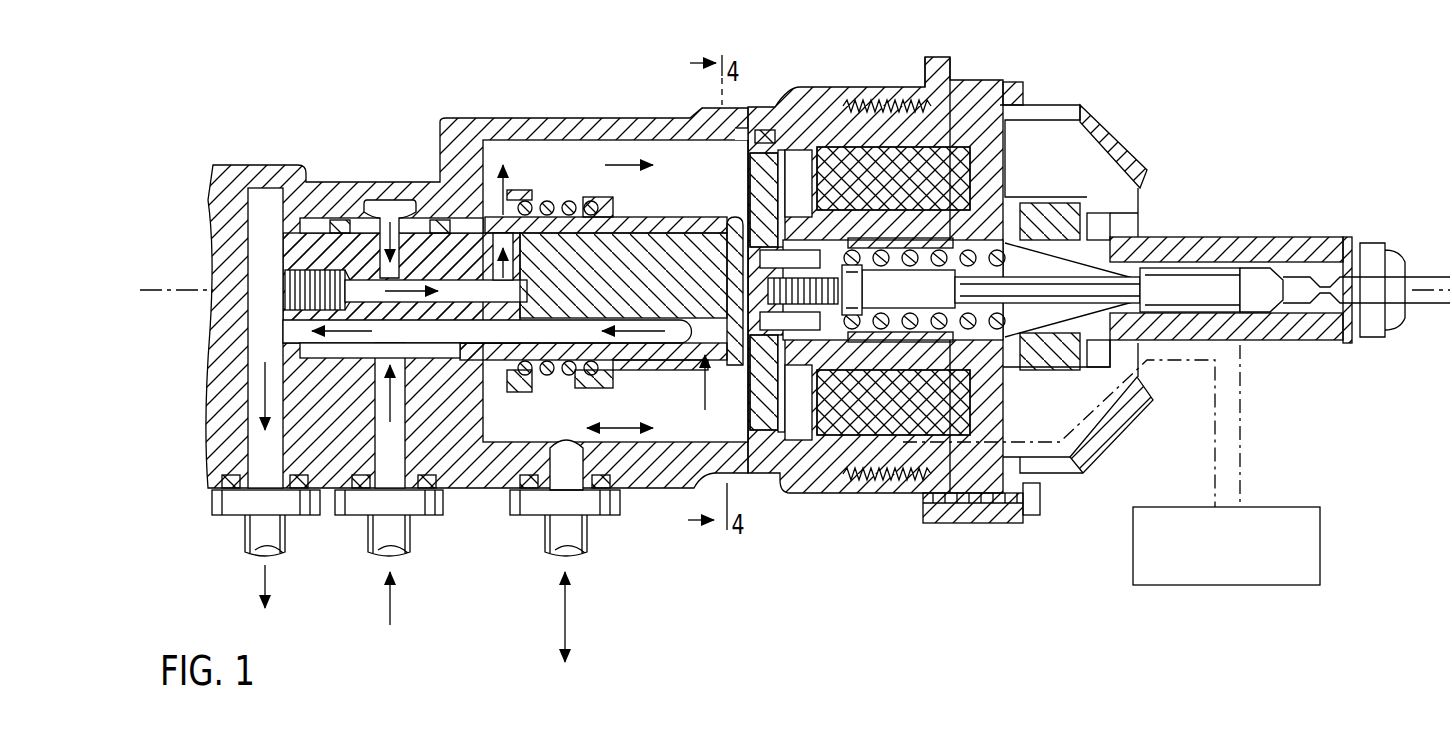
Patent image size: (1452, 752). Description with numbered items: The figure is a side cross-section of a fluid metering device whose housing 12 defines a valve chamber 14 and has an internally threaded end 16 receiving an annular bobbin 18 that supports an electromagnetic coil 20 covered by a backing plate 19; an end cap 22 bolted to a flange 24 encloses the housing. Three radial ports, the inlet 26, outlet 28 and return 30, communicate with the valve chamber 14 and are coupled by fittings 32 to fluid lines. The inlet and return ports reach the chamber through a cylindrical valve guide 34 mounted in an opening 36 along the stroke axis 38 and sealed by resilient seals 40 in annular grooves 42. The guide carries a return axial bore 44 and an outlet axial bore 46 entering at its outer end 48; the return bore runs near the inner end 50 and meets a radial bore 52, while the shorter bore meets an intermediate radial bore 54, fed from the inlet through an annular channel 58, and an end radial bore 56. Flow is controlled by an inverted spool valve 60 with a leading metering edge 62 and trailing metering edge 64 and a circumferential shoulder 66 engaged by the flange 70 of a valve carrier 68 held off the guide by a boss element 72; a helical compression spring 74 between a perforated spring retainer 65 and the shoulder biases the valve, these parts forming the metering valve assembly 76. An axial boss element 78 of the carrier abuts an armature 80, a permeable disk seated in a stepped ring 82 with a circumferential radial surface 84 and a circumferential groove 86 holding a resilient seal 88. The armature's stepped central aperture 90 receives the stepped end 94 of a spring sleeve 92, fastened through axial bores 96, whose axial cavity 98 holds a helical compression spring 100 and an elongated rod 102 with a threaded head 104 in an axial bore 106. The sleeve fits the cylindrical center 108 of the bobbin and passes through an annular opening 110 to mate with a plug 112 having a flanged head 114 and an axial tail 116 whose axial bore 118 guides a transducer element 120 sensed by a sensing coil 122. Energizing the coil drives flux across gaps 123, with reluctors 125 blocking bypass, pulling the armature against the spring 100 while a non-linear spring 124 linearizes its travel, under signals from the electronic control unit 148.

The housing 12 is at (500, 128).
The valve chamber 14 is at (701, 201).
The internally threaded end 16 is at (877, 110).
The bobbin 18 is at (978, 88).
The backing plate 19 is at (1007, 155).
The electromagnetic coil 20 is at (993, 157).
The end cap 22 is at (1100, 135).
The flange 24 is at (983, 518).
The inlet port 26 is at (396, 468).
The outlet port 28 is at (565, 472).
The return port 30 is at (263, 458).
The fittings 32 is at (297, 507).
The valve guide 34 is at (623, 247).
The opening 36 is at (314, 206).
The stroke axis 38 is at (1440, 280).
The resilient seals 40 is at (336, 358).
The annular grooves 42 is at (292, 346).
The return axial bore 44 is at (550, 332).
The outlet axial bore 46 is at (449, 303).
The outer end 48 is at (303, 252).
The inner end 50 is at (636, 271).
The radial bore 52 is at (592, 252).
The radial bore 54 is at (338, 294).
The radial bore 56 is at (505, 243).
The annular channel 58 is at (390, 208).
The valve 60 is at (572, 228).
The leading metering edge 62 is at (650, 228).
The trailing metering edge 64 is at (520, 386).
The spring retainer 65 is at (537, 382).
The circumferential shoulder 66 is at (598, 213).
The valve carrier 68 is at (641, 370).
The flange 70 is at (595, 374).
The boss element 72 is at (728, 270).
The helical compression spring 74 is at (561, 377).
The metering valve assembly 76 is at (560, 180).
The axial boss element 78 is at (708, 297).
The armature 80 is at (738, 410).
The ring 82 is at (790, 137).
The circumferential radial surface 84 is at (740, 440).
The circumferential groove 86 is at (775, 452).
The resilient seal 88 is at (705, 502).
The stepped central aperture 90 is at (750, 178).
The spring sleeve 92 is at (972, 250).
The stepped end 94 is at (834, 253).
The axial bores 96 is at (790, 262).
The axial cavity 98 is at (1042, 354).
The helical compression spring 100 is at (880, 338).
The elongated rod 102 is at (886, 303).
The threaded head 104 is at (894, 264).
The axial bore 106 is at (830, 330).
The cylindrical center 108 is at (1048, 352).
The annular opening 110 is at (1023, 210).
The plug 112 is at (1113, 213).
The flanged head 114 is at (1140, 198).
The axial tail 116 is at (1142, 280).
The axial bore 118 is at (1258, 287).
The transducer element 120 is at (1225, 288).
The sensing coil 122 is at (1320, 333).
The gaps 123 is at (780, 440).
The non-linear spring 124 is at (726, 382).
The reluctors 125 is at (803, 183).
The electronic control unit 148 is at (1228, 585).